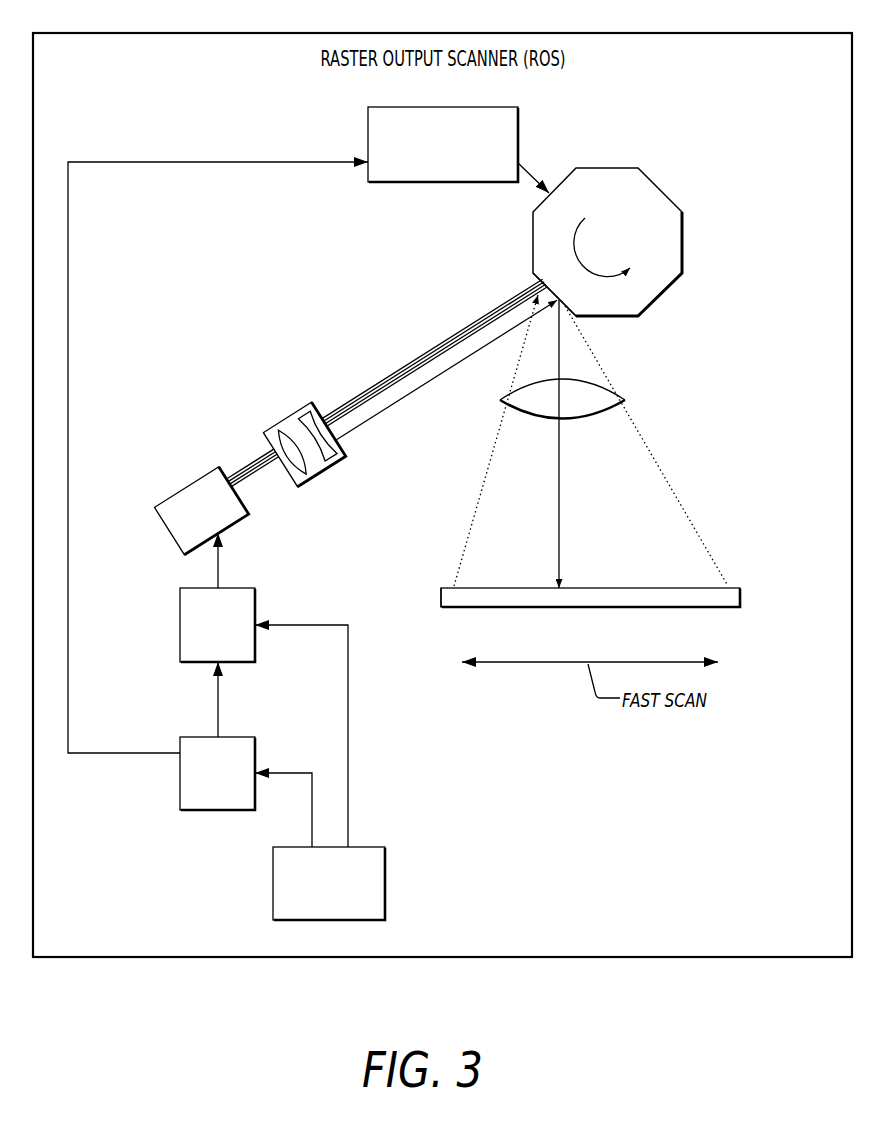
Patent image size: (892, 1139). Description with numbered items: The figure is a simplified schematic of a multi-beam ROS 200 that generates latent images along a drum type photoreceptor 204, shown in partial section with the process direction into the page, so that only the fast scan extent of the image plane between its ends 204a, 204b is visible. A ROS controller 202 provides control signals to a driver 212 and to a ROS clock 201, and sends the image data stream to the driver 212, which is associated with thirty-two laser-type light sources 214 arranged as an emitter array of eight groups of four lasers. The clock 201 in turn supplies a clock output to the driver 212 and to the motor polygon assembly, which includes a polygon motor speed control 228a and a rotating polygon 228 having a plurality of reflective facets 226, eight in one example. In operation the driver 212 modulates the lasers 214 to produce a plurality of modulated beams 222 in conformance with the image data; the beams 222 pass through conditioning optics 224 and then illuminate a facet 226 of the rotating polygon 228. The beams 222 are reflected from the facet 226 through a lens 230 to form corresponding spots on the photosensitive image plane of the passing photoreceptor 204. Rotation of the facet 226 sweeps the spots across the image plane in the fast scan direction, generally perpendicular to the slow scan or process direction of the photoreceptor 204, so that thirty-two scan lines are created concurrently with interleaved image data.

The multi-beam ROS 200 is at (443, 33).
The polygon motor speed control 228a is at (368, 127).
The rotating polygon 228 is at (682, 233).
The facet 226 is at (533, 260).
The beams 222 is at (373, 385).
The lens 230 is at (500, 400).
The conditioning optics 224 is at (313, 478).
The laser-type light sources 214 is at (162, 518).
The driver 212 is at (180, 627).
The ROS clock 201 is at (180, 792).
The ROS controller 202 is at (273, 885).
The start of scan end of photoreceptor 204a is at (441, 598).
The end of scan end of photoreceptor 204b is at (740, 598).
The photoreceptor 204 is at (741, 622).